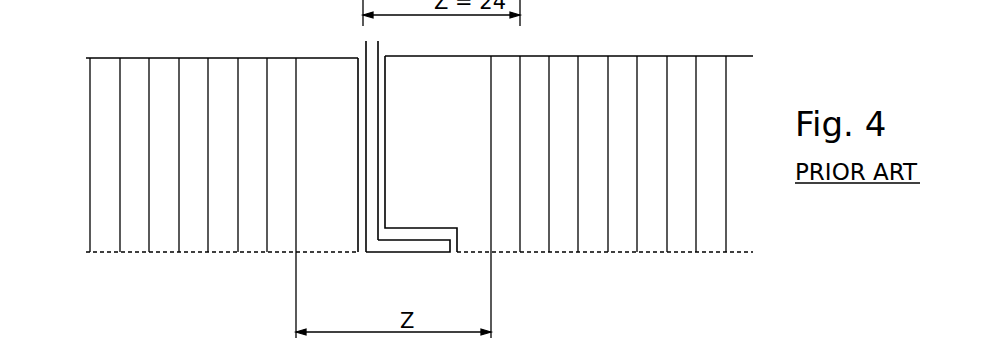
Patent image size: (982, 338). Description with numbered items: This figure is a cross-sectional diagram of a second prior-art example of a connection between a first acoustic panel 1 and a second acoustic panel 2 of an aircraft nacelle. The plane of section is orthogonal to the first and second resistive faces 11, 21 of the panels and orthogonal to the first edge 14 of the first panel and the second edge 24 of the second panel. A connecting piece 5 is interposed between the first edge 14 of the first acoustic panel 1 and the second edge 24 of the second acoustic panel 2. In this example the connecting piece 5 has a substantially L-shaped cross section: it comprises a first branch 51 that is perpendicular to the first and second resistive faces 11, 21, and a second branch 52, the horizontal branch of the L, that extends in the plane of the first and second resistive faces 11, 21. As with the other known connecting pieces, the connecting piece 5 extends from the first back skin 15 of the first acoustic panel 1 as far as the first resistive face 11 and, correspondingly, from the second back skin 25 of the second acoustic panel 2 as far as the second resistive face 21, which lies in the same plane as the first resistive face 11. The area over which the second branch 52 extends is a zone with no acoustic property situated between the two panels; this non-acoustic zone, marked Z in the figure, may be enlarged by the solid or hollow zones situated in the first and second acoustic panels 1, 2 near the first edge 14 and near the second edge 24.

The first acoustic panel 1 is at (202, 158).
The second acoustic panel 2 is at (574, 165).
The connecting piece 5 is at (409, 181).
The first resistive face 11 is at (195, 253).
The first edge 14 is at (358, 252).
The first back skin 15 is at (247, 58).
The second resistive face 21 is at (637, 253).
The second edge 24 is at (387, 57).
The second back skin 25 is at (563, 56).
The first branch 51 is at (373, 108).
The second branch 52 is at (392, 252).